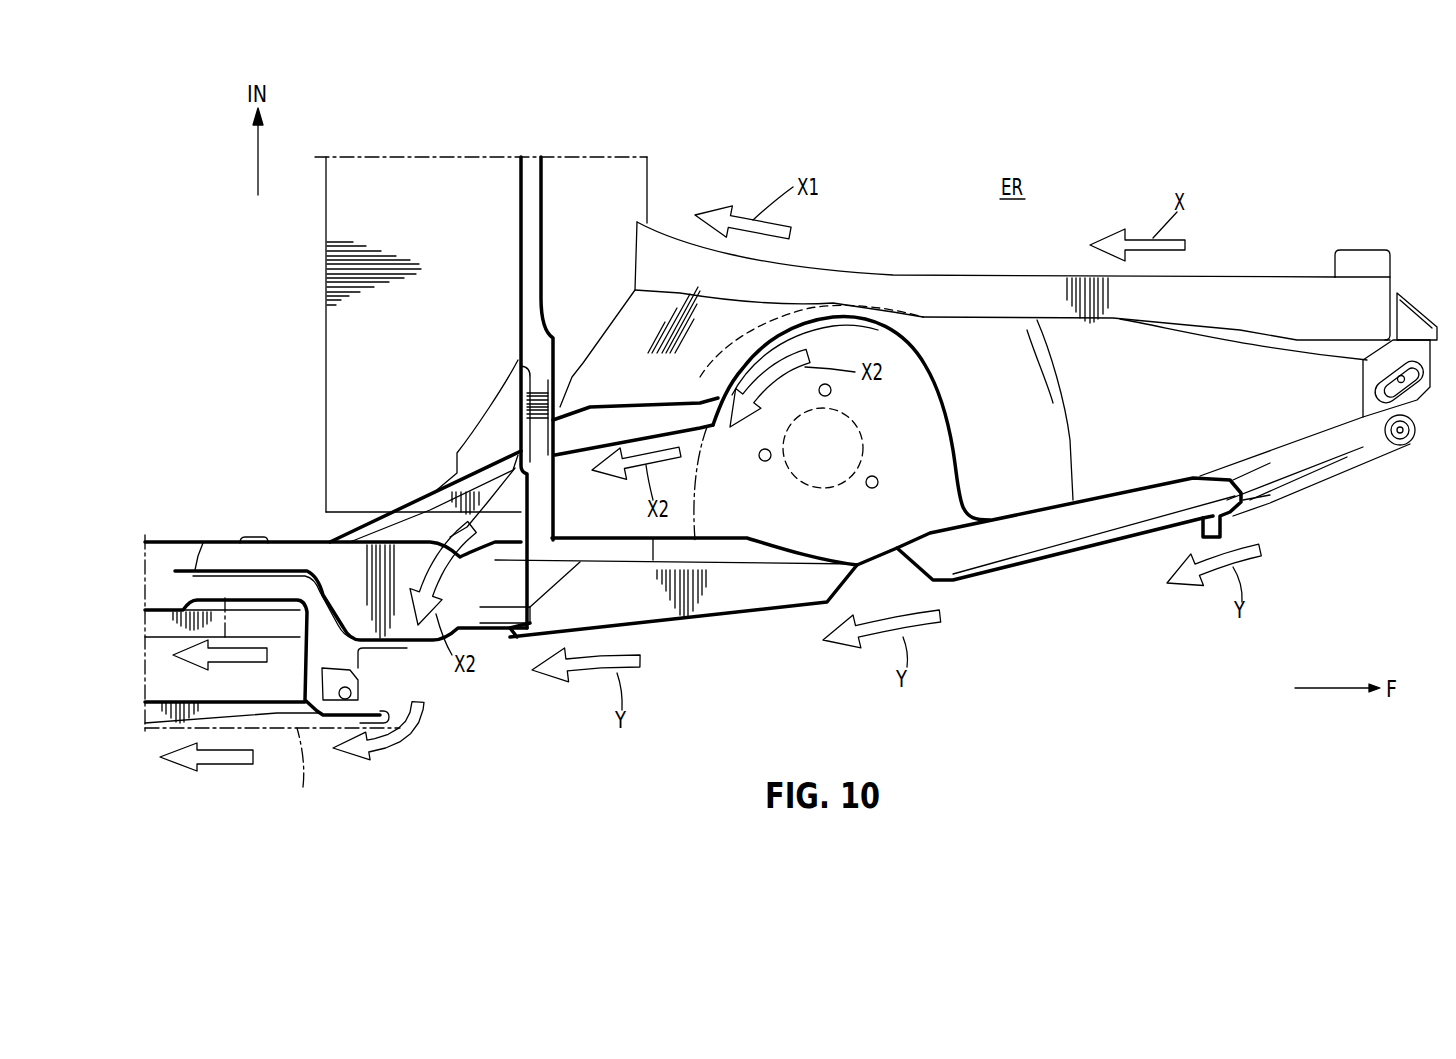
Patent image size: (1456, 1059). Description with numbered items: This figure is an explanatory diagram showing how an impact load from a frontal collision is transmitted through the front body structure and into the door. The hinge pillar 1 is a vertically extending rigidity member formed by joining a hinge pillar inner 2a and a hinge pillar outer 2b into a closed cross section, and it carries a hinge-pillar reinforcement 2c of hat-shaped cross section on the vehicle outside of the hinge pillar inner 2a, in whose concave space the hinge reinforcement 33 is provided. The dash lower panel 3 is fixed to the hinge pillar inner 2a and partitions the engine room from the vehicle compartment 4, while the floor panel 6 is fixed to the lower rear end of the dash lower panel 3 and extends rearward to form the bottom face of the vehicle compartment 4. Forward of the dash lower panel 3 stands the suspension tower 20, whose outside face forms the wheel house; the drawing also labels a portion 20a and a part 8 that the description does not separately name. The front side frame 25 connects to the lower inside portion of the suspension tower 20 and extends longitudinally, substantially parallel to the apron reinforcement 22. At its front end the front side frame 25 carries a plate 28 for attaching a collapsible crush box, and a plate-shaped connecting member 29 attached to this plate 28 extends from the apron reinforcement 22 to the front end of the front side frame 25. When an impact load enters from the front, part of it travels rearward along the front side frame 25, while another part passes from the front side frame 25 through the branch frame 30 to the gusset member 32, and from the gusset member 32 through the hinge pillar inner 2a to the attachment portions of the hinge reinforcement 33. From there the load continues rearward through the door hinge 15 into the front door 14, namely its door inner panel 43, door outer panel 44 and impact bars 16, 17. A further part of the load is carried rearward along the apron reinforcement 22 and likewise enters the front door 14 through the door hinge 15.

The hinge pillar 1 is at (304, 528).
The hinge pillar inner 2a is at (218, 540).
The hinge pillar outer 2b is at (275, 572).
The hinge-pillar reinforcement 2c is at (243, 568).
The dash lower panel 3 is at (635, 195).
The vehicle compartment 4 is at (244, 319).
The floor panel 6 is at (348, 370).
The pillar reinforcement 8 is at (518, 281).
The front door 14 is at (320, 740).
The door hinge 15 is at (378, 667).
The impact bar 16 is at (267, 713).
The impact bar 17 is at (278, 623).
The suspension tower 20 is at (955, 362).
The wheel house inner edge 20a is at (903, 337).
The apron reinforcement 22 is at (1347, 470).
The front side frame 25 is at (1215, 290).
The plate 28 is at (1355, 255).
The connecting member 29 is at (1405, 308).
The branch frame 30 is at (690, 434).
The gusset member 32 is at (447, 490).
The hinge reinforcement 33 is at (410, 560).
The door inner panel 43 is at (183, 602).
The door outer panel 44 is at (302, 774).